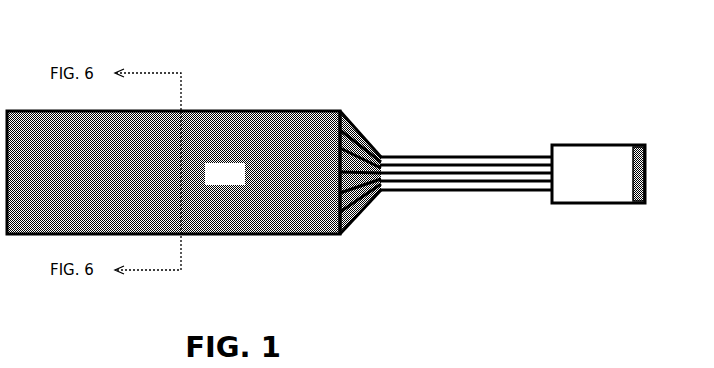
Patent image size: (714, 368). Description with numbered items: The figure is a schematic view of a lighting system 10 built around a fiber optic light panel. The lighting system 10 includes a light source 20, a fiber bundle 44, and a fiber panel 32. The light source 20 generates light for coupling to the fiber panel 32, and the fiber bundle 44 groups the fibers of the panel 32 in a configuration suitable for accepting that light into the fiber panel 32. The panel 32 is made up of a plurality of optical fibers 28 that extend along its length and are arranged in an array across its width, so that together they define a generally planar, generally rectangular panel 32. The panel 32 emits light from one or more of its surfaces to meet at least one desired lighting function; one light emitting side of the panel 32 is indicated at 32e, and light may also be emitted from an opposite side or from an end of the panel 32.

The lighting system 10 is at (326, 176).
The light source 20 is at (637, 140).
The optical fibers 28 is at (474, 148).
The fiber panel 32 is at (326, 107).
The light emitting side 32e is at (243, 185).
The fiber bundle 44 is at (598, 174).